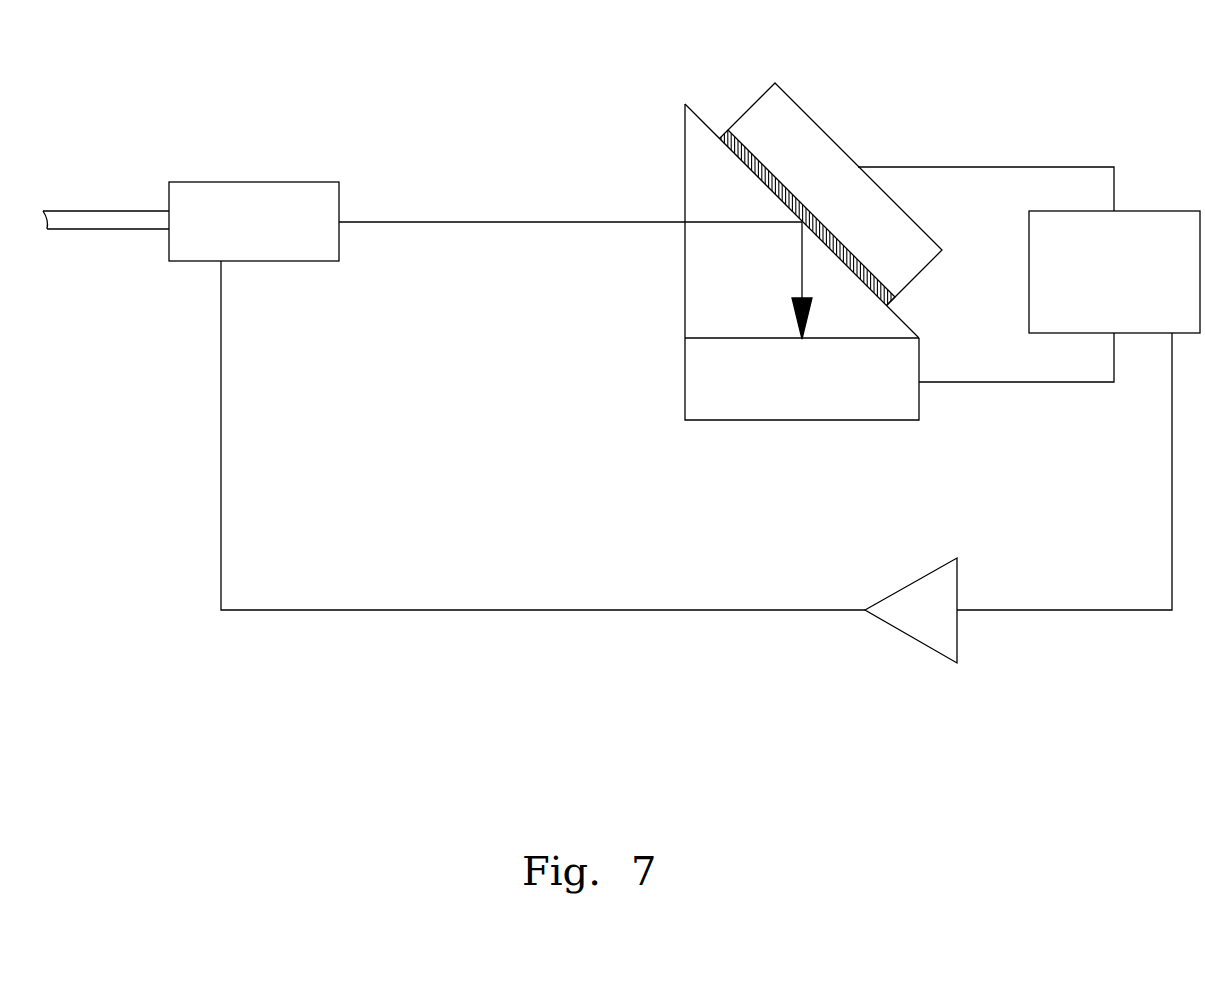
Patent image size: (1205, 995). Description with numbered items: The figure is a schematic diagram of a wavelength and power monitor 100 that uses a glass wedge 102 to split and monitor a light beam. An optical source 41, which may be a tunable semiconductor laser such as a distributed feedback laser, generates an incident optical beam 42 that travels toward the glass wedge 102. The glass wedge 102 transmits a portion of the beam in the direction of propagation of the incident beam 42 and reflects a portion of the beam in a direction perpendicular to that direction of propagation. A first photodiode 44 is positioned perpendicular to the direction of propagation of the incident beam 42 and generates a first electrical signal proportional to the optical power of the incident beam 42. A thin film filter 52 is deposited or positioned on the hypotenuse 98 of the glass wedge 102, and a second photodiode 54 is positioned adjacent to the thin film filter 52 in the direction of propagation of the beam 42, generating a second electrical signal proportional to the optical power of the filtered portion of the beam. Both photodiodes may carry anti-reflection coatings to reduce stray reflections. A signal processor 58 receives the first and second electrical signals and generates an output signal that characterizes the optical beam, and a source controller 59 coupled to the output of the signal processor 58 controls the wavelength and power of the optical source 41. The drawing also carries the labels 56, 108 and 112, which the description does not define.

The optical source 41 is at (247, 180).
The incident optical beam 42 is at (465, 219).
The first photodiode 44 is at (684, 422).
The thin film filter 52 is at (798, 198).
The second photodiode 54 is at (780, 98).
The edge of coating 56 is at (899, 303).
The signal processor 58 is at (1180, 209).
The source controller 59 is at (951, 555).
The hypotenuse 98 is at (744, 171).
The wavelength and power monitor 100 is at (942, 93).
The glass wedge 102 is at (683, 259).
The reflecting surface 108 is at (858, 343).
The apex 112 is at (685, 103).